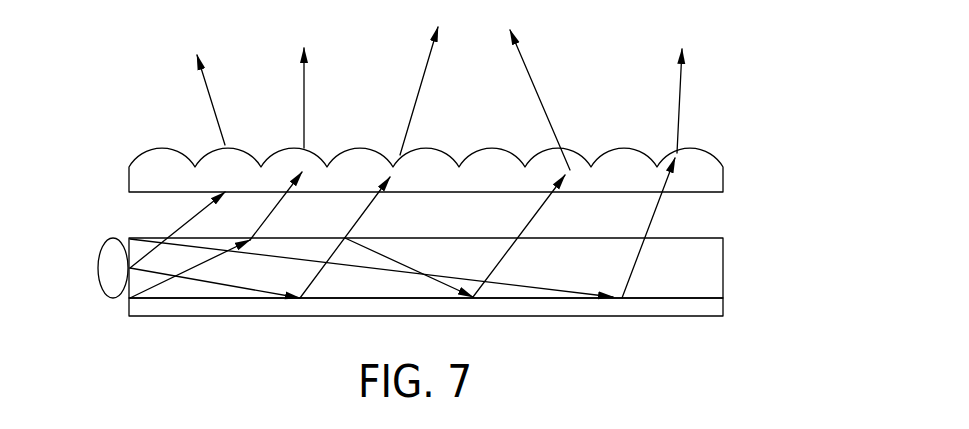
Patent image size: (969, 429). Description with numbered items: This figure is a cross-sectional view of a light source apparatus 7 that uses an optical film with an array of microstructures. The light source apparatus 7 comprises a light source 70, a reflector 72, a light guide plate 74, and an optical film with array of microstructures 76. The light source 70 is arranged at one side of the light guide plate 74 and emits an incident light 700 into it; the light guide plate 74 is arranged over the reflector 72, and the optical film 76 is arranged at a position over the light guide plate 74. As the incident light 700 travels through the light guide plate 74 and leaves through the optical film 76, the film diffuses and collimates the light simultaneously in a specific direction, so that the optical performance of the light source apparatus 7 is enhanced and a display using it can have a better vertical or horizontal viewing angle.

The light source apparatus 7 is at (767, 140).
The light source 70 is at (110, 285).
The incident light 700 is at (155, 270).
The reflector 72 is at (712, 311).
The light guide plate 74 is at (712, 274).
The optical film with array of microstructures 76 is at (715, 185).